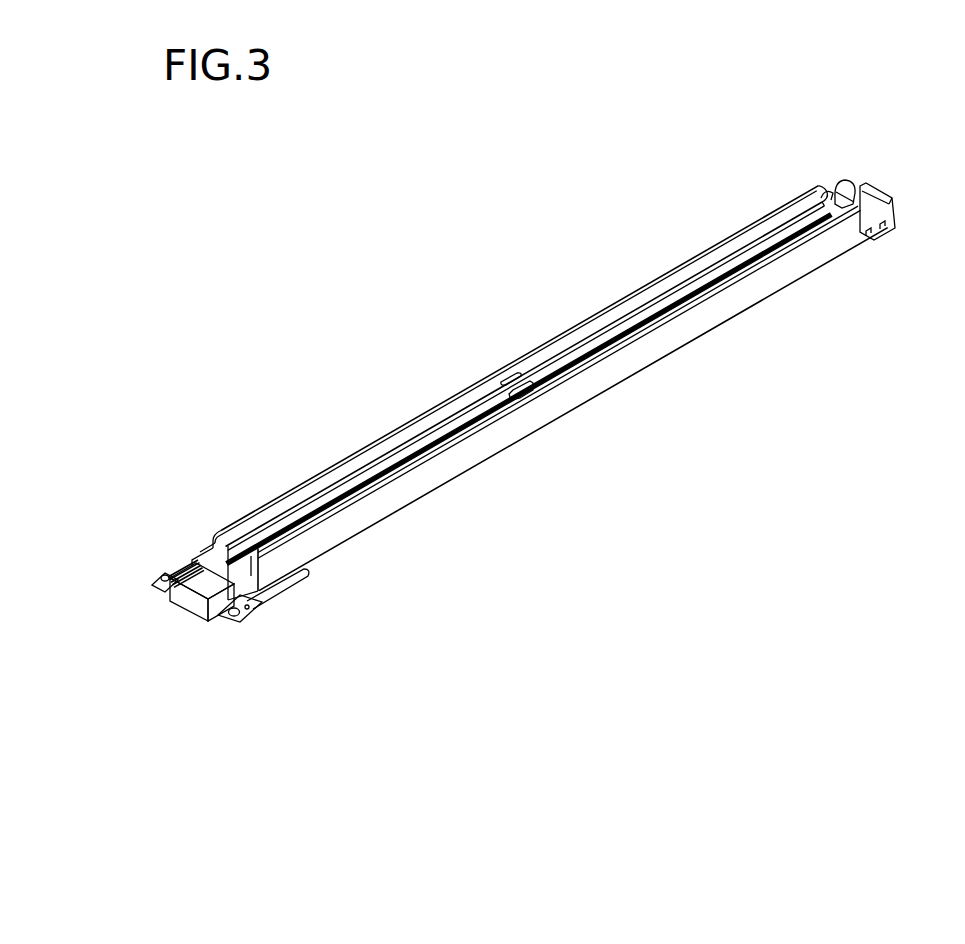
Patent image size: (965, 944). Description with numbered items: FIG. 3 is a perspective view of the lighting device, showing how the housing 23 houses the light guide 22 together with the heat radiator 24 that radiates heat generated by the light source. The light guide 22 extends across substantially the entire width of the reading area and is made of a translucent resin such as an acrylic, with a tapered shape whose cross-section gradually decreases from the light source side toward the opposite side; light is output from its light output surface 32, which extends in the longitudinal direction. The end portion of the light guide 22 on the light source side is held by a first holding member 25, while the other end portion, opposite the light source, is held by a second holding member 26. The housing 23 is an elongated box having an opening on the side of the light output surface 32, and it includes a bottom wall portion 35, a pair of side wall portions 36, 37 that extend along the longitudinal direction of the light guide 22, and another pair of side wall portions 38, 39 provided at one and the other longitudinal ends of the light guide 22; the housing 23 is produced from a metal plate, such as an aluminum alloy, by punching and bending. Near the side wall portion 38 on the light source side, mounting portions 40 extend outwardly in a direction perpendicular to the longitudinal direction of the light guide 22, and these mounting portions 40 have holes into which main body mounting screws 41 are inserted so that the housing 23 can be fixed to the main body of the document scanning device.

The light guide 22 is at (467, 430).
The housing 23 is at (598, 397).
The heat radiator 24 is at (188, 613).
The first holding member 25 is at (183, 552).
The second holding member 26 is at (829, 195).
The light output surface 32 is at (392, 453).
The bottom wall portion 35 is at (547, 382).
The side wall portion 36 is at (492, 373).
The side wall portion 37 is at (525, 423).
The side wall portion 38 is at (177, 566).
The side wall portion 39 is at (880, 192).
The mounting portions 40 is at (162, 592).
The main body mounting screws 41 is at (167, 575).